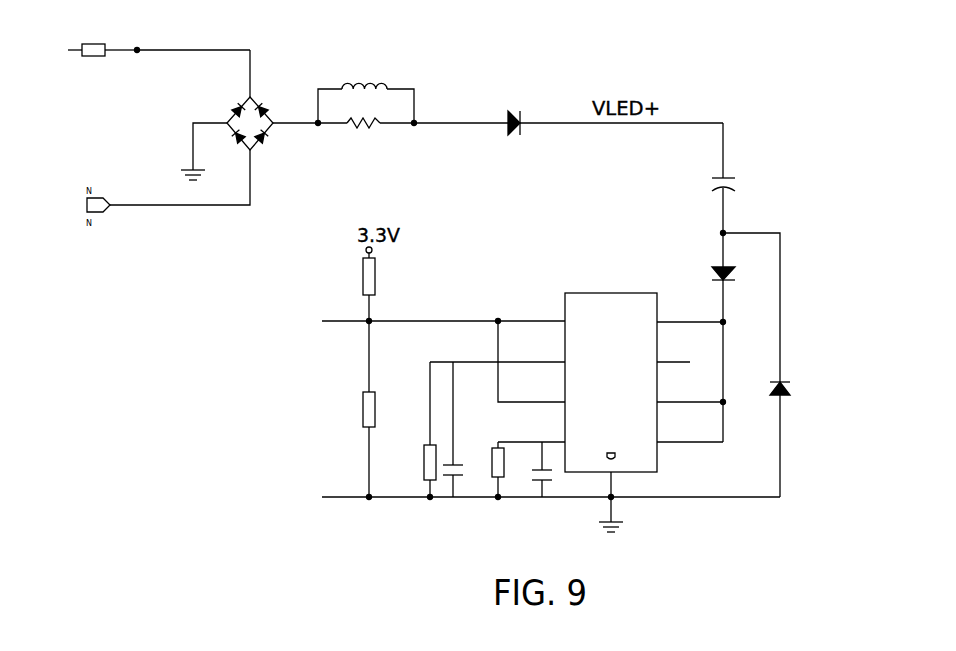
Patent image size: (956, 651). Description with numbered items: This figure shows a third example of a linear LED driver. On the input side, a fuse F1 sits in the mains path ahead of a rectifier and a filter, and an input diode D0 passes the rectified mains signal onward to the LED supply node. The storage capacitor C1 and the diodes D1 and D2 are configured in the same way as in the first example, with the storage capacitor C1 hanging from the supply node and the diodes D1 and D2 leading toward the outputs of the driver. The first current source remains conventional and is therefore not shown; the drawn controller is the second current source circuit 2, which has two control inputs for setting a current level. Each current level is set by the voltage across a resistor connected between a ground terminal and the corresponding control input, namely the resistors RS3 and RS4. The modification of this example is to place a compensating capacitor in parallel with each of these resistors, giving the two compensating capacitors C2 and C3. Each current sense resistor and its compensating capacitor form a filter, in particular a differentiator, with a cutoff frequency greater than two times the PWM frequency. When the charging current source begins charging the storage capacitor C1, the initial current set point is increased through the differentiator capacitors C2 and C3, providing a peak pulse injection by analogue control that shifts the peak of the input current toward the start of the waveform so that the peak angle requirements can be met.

The second current source circuit 2 is at (579, 268).
The fuse F1 is at (102, 50).
The input diode D0 is at (520, 105).
The storage capacitor C1 is at (742, 180).
The diode D1 is at (705, 266).
The diode D2 is at (767, 377).
The resistor RS3 is at (411, 429).
The resistor RS4 is at (480, 469).
The compensating capacitor C2 is at (467, 429).
The compensating capacitor C3 is at (530, 469).